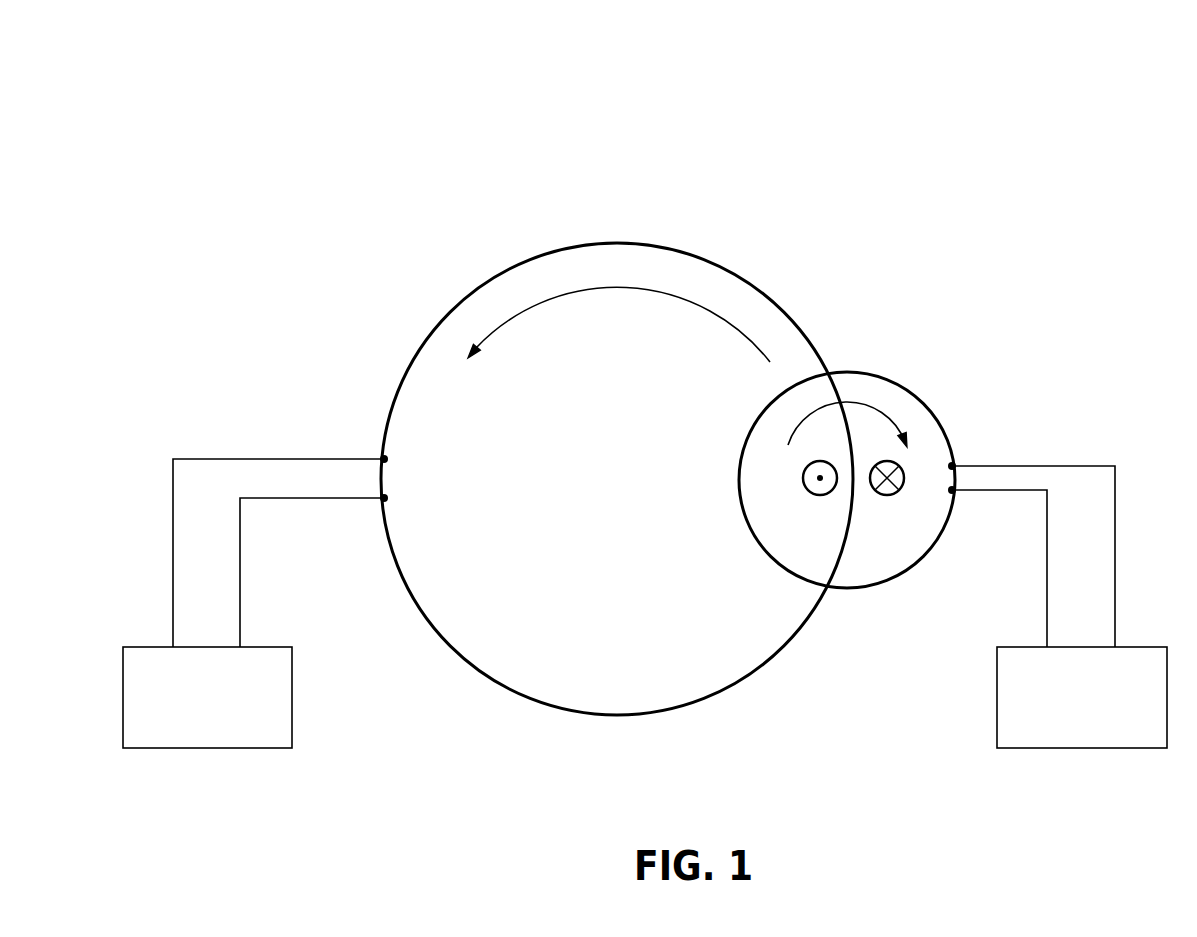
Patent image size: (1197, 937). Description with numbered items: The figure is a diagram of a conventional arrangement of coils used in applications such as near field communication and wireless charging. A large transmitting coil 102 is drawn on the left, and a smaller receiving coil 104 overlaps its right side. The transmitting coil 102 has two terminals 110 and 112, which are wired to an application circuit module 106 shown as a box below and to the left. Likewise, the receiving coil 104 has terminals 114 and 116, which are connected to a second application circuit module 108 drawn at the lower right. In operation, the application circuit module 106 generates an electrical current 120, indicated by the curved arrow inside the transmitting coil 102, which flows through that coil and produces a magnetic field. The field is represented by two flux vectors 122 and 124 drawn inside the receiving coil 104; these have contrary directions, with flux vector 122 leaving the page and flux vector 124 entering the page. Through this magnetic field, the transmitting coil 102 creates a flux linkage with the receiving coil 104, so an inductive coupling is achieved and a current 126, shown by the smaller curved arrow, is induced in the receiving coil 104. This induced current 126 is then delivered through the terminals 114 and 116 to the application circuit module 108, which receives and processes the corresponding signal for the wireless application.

The transmitting coil 102 is at (652, 243).
The receiving coil 104 is at (884, 378).
The application circuit module 106 is at (258, 647).
The application circuit module 108 is at (1132, 647).
The terminal 110 is at (384, 459).
The terminal 112 is at (384, 498).
The terminal 114 is at (952, 466).
The terminal 116 is at (952, 490).
The electrical current 120 is at (668, 293).
The flux vector 122 is at (820, 495).
The flux vector 124 is at (887, 495).
The current 126 is at (890, 416).